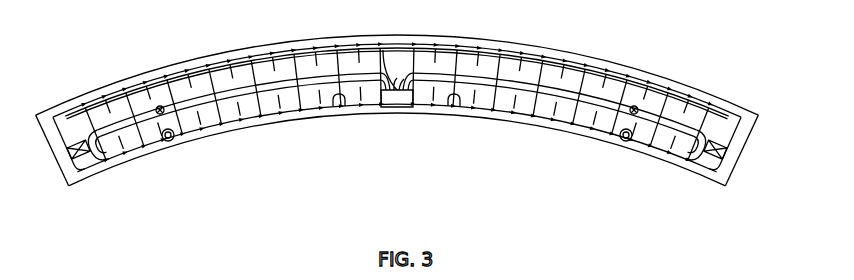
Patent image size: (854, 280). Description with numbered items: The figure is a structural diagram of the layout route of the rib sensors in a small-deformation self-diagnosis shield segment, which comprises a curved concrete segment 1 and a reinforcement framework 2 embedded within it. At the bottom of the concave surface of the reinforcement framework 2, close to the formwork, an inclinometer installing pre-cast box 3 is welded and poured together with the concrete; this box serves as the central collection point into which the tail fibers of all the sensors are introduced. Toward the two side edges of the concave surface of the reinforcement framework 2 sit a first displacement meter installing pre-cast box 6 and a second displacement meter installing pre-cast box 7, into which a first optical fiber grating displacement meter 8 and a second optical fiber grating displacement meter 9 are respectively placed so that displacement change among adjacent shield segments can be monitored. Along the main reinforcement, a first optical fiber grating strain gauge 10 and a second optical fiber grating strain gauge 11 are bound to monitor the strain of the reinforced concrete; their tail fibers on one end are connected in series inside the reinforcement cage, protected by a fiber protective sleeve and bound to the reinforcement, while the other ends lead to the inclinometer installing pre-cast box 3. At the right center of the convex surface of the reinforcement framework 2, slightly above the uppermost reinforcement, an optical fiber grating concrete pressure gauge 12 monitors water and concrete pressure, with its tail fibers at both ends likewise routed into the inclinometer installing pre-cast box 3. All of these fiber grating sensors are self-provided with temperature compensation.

The concrete segment 1 is at (397, 110).
The reinforcement framework 2 is at (397, 94).
The inclinometer installing pre-cast box 3 is at (407, 114).
The first displacement meter installing pre-cast box 6 is at (98, 169).
The second displacement meter installing pre-cast box 7 is at (701, 172).
The first optical fiber grating displacement meter 8 is at (110, 168).
The second optical fiber grating displacement meter 9 is at (722, 175).
The first optical fiber grating strain gauge 10 is at (396, 65).
The second optical fiber grating strain gauge 11 is at (397, 90).
The optical fiber grating concrete pressure gauge 12 is at (407, 51).